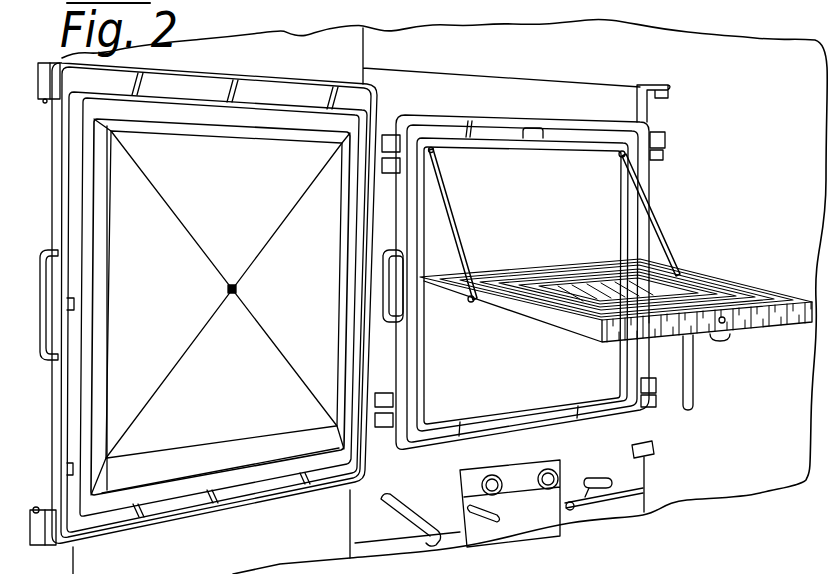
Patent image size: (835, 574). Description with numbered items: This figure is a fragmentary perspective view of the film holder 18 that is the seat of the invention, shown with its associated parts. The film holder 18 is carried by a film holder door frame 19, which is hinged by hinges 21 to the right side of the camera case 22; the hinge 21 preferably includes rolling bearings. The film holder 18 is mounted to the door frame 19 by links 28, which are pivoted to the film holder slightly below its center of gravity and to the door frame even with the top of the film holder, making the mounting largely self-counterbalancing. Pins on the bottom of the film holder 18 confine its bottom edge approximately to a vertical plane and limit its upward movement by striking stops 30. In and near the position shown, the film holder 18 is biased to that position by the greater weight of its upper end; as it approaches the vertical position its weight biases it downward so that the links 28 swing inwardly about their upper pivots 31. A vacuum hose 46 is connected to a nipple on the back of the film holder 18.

The film holder 18 is at (706, 281).
The film holder door frame 19 is at (643, 178).
The hinge 21 is at (665, 141).
The camera case 22 is at (652, 108).
The links 28 is at (452, 230).
The stops 30 is at (470, 300).
The upper pivots 31 is at (619, 157).
The vacuum hose 46 is at (694, 378).